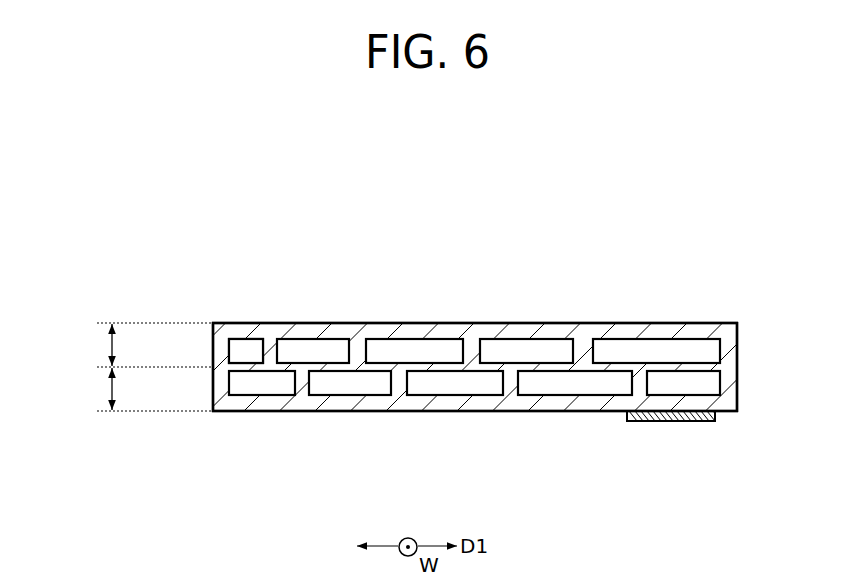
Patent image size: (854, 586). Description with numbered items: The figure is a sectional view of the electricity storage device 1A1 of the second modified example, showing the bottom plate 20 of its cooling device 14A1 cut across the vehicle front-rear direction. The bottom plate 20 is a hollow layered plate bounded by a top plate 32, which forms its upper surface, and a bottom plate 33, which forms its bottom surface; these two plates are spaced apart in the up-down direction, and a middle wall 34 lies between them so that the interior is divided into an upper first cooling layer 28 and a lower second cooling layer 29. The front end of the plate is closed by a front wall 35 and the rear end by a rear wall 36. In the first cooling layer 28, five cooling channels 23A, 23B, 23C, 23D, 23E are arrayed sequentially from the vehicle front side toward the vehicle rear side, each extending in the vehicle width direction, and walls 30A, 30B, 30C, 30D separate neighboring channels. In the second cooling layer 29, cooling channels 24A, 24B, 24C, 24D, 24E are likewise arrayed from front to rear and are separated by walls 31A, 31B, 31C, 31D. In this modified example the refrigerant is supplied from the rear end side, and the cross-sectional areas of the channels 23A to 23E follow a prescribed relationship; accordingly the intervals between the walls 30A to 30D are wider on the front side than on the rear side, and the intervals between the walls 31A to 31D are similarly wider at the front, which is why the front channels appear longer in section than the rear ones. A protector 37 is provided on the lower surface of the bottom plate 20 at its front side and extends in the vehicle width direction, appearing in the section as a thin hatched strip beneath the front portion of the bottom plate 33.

The bottom plate 20 is at (283, 222).
The electricity storage device 1A1 is at (471, 215).
The cooling device 14A1 is at (475, 367).
The cooling channel 23A is at (667, 353).
The cooling channel 23B is at (520, 347).
The cooling channel 23C is at (385, 347).
The cooling channel 23D is at (313, 343).
The cooling channel 23E is at (240, 348).
The cooling channel 24A is at (703, 390).
The cooling channel 24B is at (565, 392).
The cooling channel 24C is at (448, 392).
The cooling channel 24D is at (345, 390).
The cooling channel 24E is at (256, 387).
The first cooling layer 28 is at (140, 345).
The second cooling layer 29 is at (140, 389).
The wall 30A is at (585, 350).
The wall 30B is at (469, 360).
The wall 30C is at (357, 360).
The wall 30D is at (268, 357).
The wall 31A is at (657, 392).
The wall 31B is at (510, 393).
The wall 31C is at (399, 393).
The wall 31D is at (302, 394).
The top plate 32 is at (423, 328).
The bottom plate 33 is at (598, 405).
The middle wall 34 is at (638, 342).
The front wall 35 is at (730, 372).
The rear wall 36 is at (228, 354).
The protector 37 is at (713, 417).